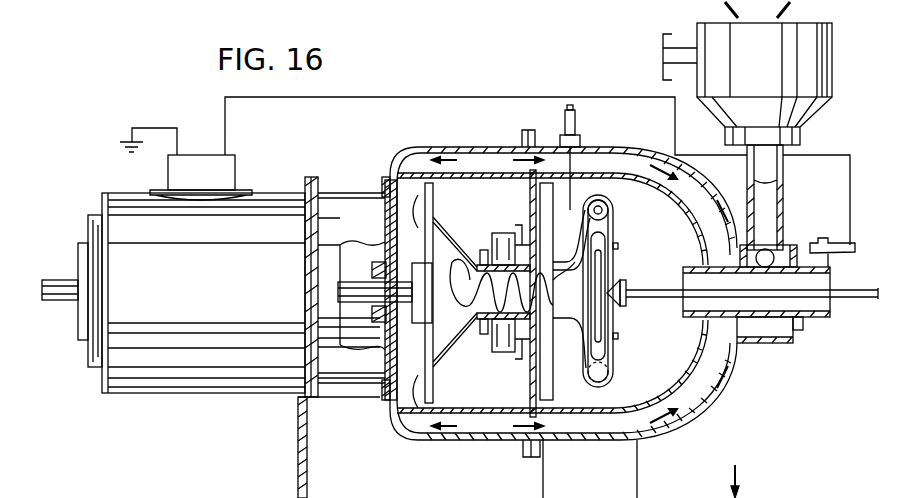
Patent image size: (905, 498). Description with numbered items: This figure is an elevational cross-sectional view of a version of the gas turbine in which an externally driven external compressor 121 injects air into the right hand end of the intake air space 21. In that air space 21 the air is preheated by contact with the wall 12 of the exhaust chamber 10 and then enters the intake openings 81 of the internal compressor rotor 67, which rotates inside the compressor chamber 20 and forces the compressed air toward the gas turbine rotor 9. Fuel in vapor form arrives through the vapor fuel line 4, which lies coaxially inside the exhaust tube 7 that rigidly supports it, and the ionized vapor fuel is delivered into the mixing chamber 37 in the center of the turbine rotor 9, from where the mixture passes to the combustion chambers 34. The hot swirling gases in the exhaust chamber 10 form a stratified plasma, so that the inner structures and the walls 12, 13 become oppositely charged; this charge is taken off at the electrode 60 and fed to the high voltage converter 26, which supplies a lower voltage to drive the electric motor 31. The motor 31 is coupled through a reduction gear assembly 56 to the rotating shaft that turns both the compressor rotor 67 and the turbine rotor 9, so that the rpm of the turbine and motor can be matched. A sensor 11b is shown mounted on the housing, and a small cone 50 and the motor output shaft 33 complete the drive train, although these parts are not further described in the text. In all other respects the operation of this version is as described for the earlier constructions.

The vapor fuel line 4 is at (846, 290).
The exhaust tube 7 is at (820, 318).
The gas turbine rotor 9 is at (613, 236).
The exhaust chamber 10 is at (672, 238).
The sensor 11b is at (578, 119).
The outer wall of the exhaust chamber 12 is at (713, 199).
The exhaust chamber wall 13 is at (692, 362).
The compressor chamber 20 is at (485, 383).
The intake air space 21 is at (689, 180).
The high voltage converter 26 is at (236, 158).
The electric motor 31 is at (215, 280).
The motor shaft 33 is at (68, 306).
The combustion chambers 34 is at (612, 197).
The mixing chamber 37 is at (575, 322).
The cone 50 is at (626, 282).
The reduction gear assembly 56 is at (347, 392).
The electrode 60 is at (853, 242).
The compressor rotor 67 is at (435, 191).
The intake openings 81 is at (428, 243).
The external compressor 121 is at (834, 52).